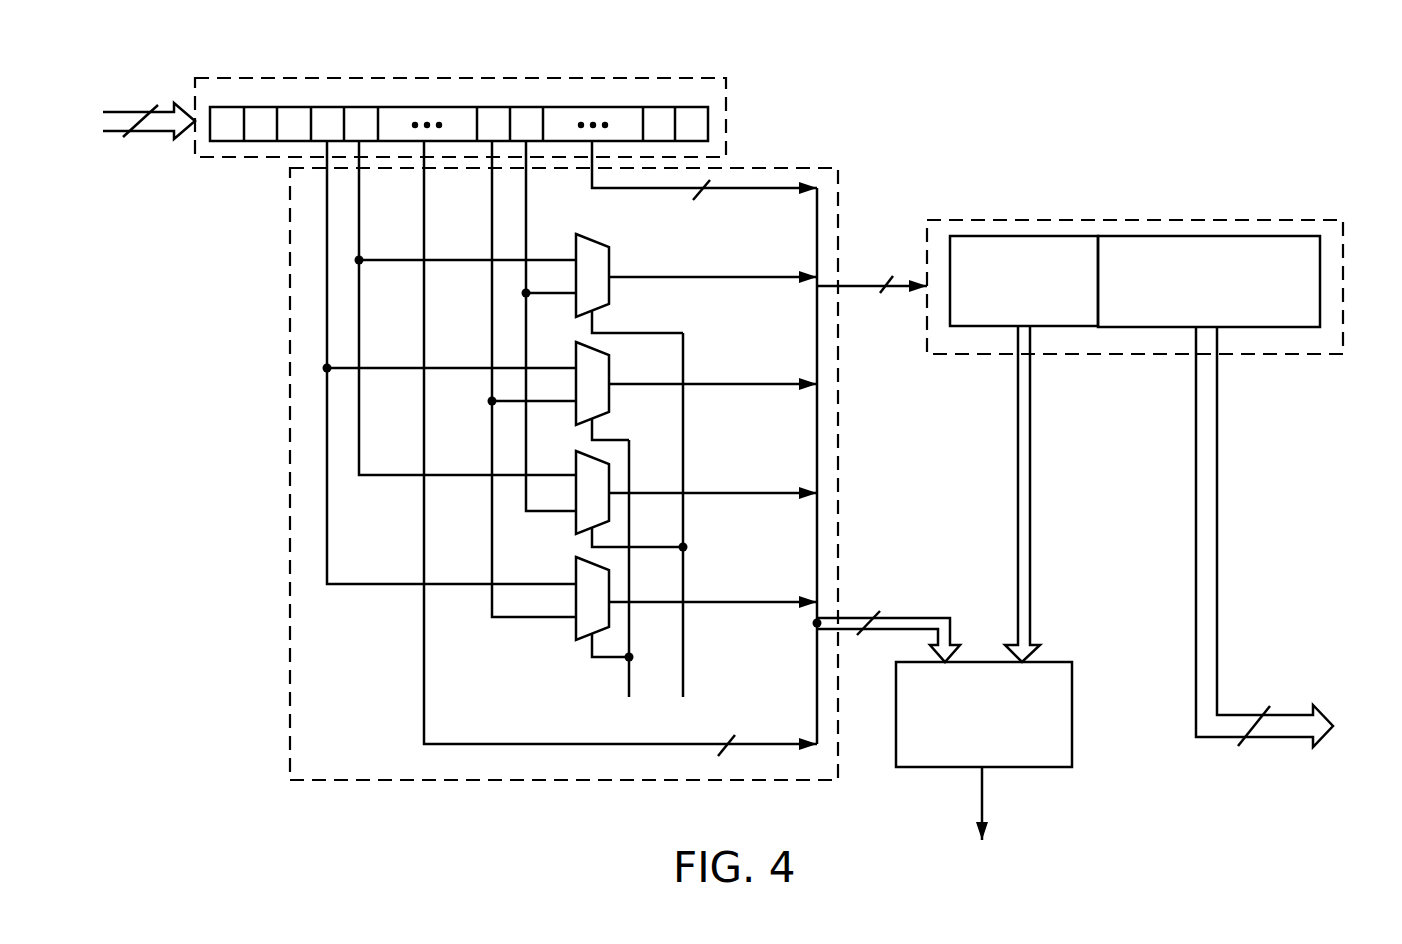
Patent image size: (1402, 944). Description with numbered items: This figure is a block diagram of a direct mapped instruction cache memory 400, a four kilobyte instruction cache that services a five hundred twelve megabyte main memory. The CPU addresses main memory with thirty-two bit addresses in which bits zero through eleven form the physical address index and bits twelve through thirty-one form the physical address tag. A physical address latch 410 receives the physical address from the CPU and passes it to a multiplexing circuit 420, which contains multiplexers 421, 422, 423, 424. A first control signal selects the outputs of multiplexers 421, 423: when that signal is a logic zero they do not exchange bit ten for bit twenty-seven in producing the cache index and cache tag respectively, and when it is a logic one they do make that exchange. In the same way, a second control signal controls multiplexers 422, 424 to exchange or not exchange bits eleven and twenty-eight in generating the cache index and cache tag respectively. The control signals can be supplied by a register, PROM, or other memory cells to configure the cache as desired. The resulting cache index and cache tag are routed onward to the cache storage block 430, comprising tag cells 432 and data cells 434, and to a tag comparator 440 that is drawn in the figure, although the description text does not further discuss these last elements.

The cache memory 400 is at (993, 67).
The physical address latch 410 is at (712, 78).
The multiplexing circuit 420 is at (290, 452).
The multiplexer 421 is at (598, 243).
The multiplexer 422 is at (576, 355).
The multiplexer 423 is at (576, 527).
The multiplexer 424 is at (576, 634).
The cache memory 430 is at (1128, 220).
The tag cells 432 is at (1048, 320).
The data cells 434 is at (1268, 320).
The tag comparator 440 is at (1021, 756).